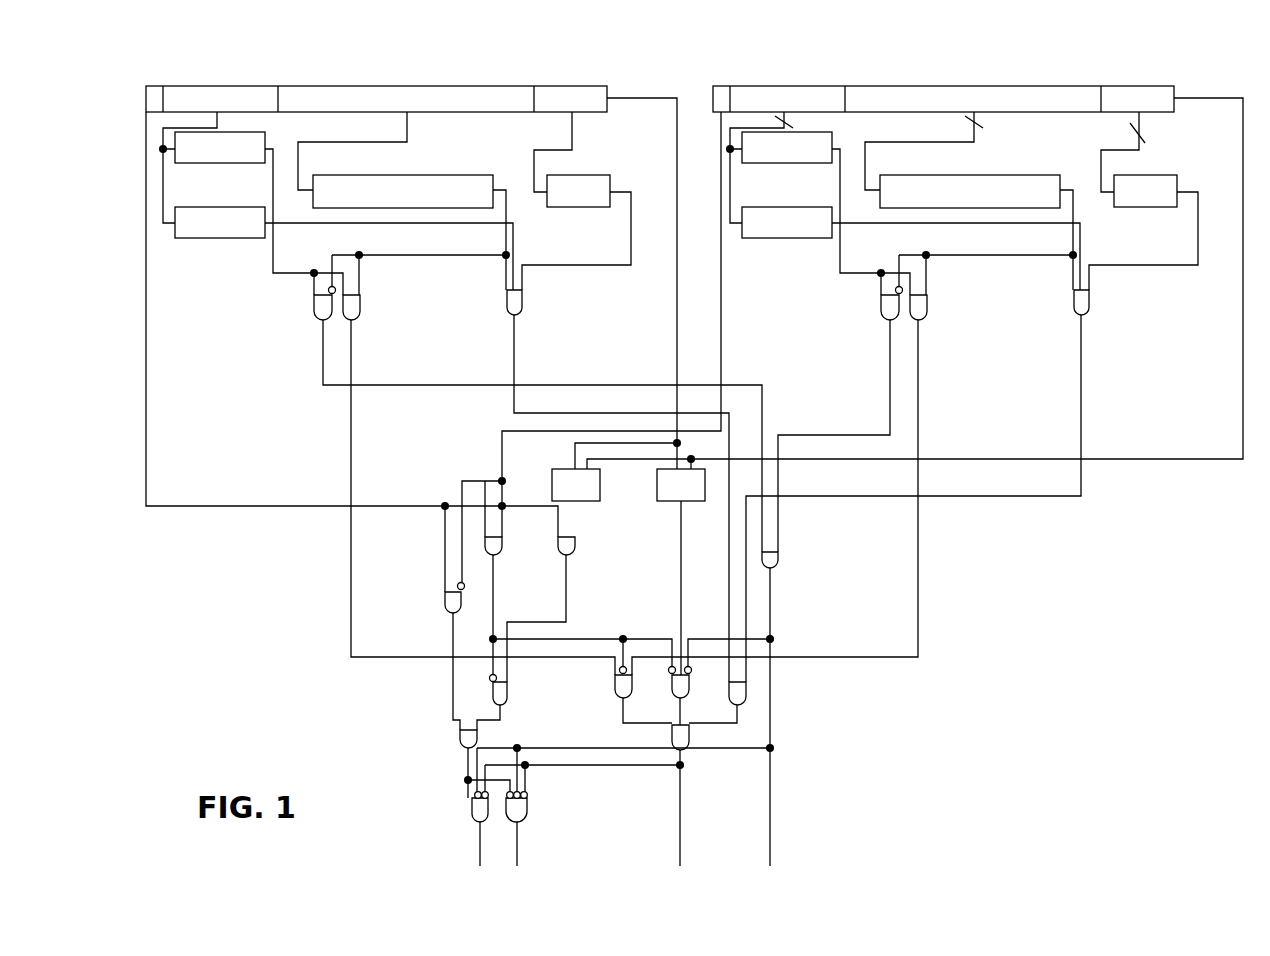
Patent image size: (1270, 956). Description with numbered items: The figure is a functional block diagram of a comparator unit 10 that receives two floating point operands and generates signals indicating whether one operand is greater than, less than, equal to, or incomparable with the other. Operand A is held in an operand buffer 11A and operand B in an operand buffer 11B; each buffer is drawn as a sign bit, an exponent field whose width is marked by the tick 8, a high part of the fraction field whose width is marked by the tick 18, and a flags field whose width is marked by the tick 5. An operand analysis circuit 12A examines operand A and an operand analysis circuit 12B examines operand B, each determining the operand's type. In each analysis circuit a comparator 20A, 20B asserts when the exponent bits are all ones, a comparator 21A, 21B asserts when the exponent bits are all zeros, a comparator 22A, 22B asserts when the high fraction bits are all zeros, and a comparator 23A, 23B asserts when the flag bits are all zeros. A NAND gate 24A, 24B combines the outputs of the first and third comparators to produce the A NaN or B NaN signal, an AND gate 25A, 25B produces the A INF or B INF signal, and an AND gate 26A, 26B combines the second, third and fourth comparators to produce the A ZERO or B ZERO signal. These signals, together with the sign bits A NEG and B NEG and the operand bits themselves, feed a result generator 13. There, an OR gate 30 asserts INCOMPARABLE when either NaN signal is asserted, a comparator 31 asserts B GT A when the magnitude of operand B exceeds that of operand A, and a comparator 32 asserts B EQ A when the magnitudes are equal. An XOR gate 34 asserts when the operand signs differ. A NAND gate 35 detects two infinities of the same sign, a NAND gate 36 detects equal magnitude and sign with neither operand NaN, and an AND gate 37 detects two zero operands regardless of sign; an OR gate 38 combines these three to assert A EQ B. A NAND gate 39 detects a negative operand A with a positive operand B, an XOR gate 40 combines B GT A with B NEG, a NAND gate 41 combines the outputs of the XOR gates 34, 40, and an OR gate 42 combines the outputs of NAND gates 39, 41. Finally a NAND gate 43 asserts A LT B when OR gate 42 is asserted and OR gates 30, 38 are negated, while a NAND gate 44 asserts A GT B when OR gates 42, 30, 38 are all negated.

The comparator unit 10 is at (1049, 589).
The operand buffer 11A is at (376, 76).
The operand buffer 11B is at (943, 76).
The operand analysis circuit 12A is at (312, 353).
The operand analysis circuit 12B is at (1093, 464).
The result generator 13 is at (446, 666).
The exponent bit width 8 is at (208, 116).
The fraction high part bit width 18 is at (398, 116).
The flags bit width 5 is at (563, 123).
The comparator 20A is at (225, 165).
The comparator 21A is at (222, 239).
The comparator 22A is at (408, 173).
The comparator 23A is at (582, 172).
The NAND gate 24A is at (313, 302).
The AND gate 25A is at (363, 302).
The AND gate 26A is at (525, 302).
The comparator 20B is at (792, 165).
The comparator 21B is at (789, 239).
The comparator 22B is at (975, 173).
The comparator 23B is at (1149, 172).
The NAND gate 24B is at (880, 302).
The AND gate 25B is at (930, 302).
The AND gate 26B is at (1092, 302).
The OR gate 30 is at (776, 552).
The comparator 31 is at (625, 105).
The comparator 32 is at (688, 503).
The XOR gate 34 is at (500, 555).
The NAND gate 35 is at (618, 690).
The NAND gate 36 is at (675, 690).
The AND gate 37 is at (729, 693).
The OR gate 38 is at (691, 742).
The NAND gate 39 is at (450, 604).
The XOR gate 40 is at (573, 555).
The NAND gate 41 is at (513, 682).
The OR gate 42 is at (460, 740).
The NAND gate 43 is at (472, 813).
The NAND gate 44 is at (526, 812).